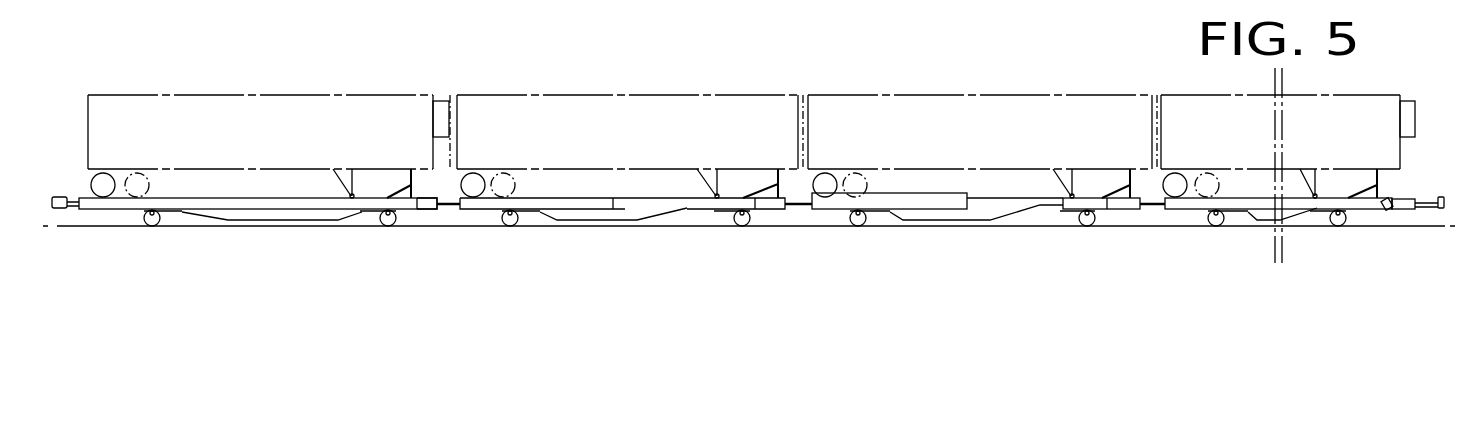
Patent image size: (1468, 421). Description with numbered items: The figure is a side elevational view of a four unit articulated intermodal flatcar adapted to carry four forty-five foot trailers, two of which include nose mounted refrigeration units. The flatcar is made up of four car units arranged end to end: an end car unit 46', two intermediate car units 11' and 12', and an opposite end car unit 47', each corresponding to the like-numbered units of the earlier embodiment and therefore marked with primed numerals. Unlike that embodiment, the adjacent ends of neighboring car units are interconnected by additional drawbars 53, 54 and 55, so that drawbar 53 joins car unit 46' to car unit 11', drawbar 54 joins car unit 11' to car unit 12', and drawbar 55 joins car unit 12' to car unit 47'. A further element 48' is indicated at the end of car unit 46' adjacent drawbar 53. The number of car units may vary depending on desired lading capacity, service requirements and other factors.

The car unit 46' is at (250, 191).
The car unit 47' is at (1302, 191).
The end coupler of leading car 48' is at (411, 243).
The drawbar 53 is at (450, 210).
The drawbar 54 is at (796, 210).
The drawbar 55 is at (1149, 210).
The car unit 11' is at (627, 191).
The car unit 12' is at (980, 191).